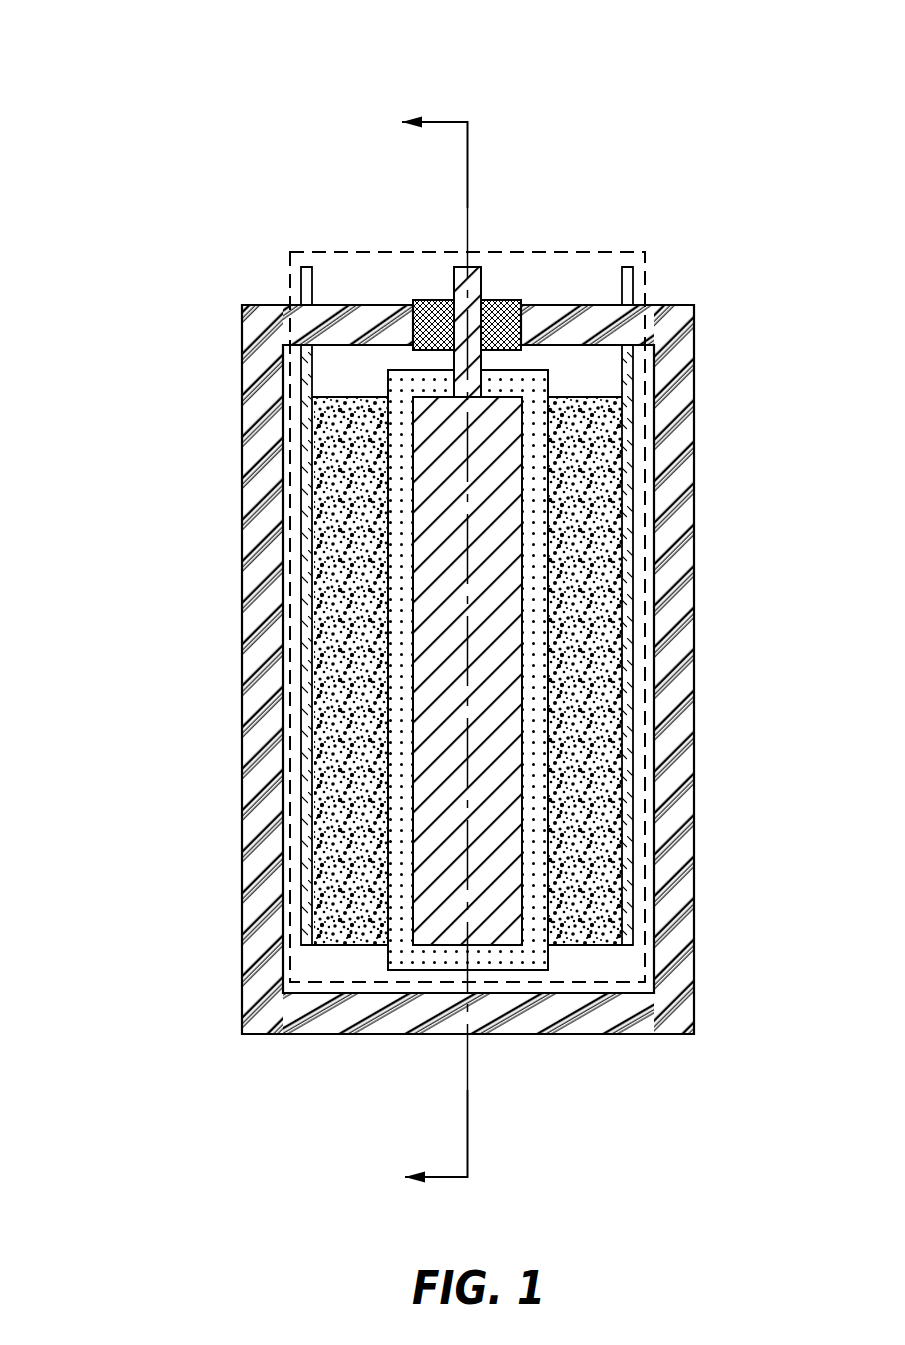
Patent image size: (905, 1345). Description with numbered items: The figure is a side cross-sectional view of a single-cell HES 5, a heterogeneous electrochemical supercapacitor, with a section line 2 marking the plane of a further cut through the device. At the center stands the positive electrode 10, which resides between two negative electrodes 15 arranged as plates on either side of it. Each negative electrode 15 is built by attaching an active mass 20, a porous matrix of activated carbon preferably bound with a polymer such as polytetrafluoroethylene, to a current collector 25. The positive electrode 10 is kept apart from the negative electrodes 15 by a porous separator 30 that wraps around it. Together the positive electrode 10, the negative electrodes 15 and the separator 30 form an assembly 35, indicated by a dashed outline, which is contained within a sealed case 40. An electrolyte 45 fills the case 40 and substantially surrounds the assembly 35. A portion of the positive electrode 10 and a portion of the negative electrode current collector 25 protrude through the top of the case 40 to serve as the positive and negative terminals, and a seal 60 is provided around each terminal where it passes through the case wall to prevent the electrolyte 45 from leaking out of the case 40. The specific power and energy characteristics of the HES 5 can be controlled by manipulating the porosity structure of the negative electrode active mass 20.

The section line 2- 2 is at (422, 650).
The HES 5 is at (122, 112).
The positive electrode 10 is at (500, 930).
The negative electrode 15 is at (333, 378).
The active mass 20 is at (352, 925).
The current collector 25 is at (632, 445).
The separator 30 is at (540, 955).
The assembly 35 is at (325, 252).
The case 40 is at (242, 420).
The electrolyte 45 is at (582, 365).
The seal 60 is at (512, 300).